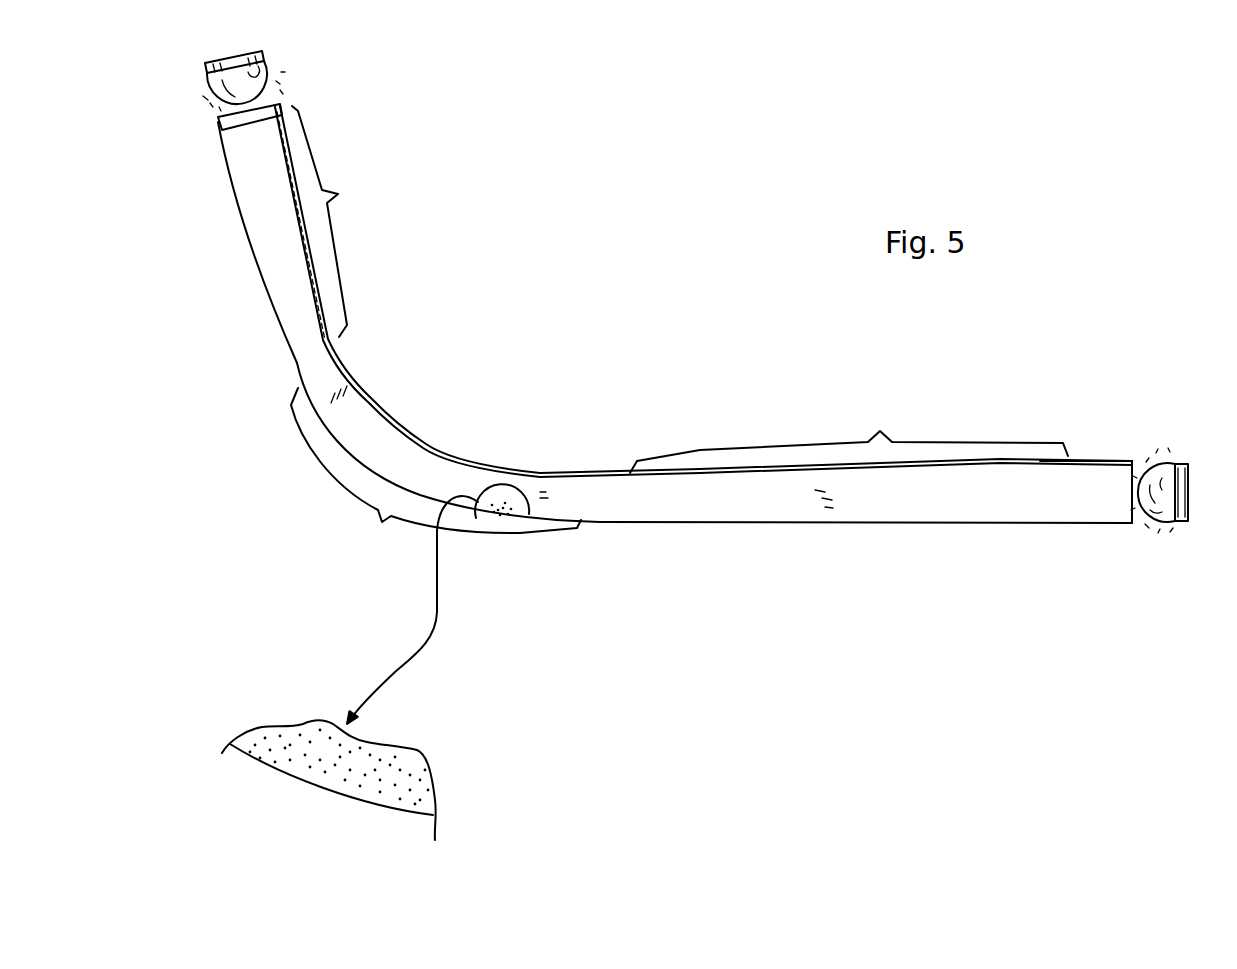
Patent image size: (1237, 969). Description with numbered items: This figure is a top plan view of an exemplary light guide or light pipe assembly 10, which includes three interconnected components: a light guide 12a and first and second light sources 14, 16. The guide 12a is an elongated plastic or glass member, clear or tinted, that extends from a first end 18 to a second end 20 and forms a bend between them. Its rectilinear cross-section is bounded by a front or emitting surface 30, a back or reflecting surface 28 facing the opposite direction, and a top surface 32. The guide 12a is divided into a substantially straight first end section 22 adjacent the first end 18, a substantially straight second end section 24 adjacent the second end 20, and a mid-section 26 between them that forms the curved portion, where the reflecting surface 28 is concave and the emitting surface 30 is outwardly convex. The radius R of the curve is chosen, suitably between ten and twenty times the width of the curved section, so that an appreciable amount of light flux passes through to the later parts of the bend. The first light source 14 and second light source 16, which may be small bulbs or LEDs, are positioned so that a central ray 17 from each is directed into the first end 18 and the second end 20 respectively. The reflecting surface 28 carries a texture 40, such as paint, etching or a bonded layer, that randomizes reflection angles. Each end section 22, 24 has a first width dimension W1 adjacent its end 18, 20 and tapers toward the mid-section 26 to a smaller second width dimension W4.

The light guide assembly 10 is at (519, 369).
The light guide 12a is at (762, 507).
The first light source 14 is at (262, 77).
The second light source 16 is at (1165, 485).
The central ray 17 is at (252, 108).
The first end 18 is at (276, 116).
The second end 20 is at (1100, 512).
The first end section 22 is at (337, 221).
The second end section 24 is at (852, 428).
The mid-section 26 is at (436, 474).
The back or reflecting surface 28 is at (613, 477).
The front or emitting surface 30 is at (923, 523).
The top surface 32 is at (300, 752).
The texture 40 is at (1083, 462).
The radius R is at (506, 299).
The first width dimension W1 is at (263, 147).
The second width dimension W4 is at (327, 349).